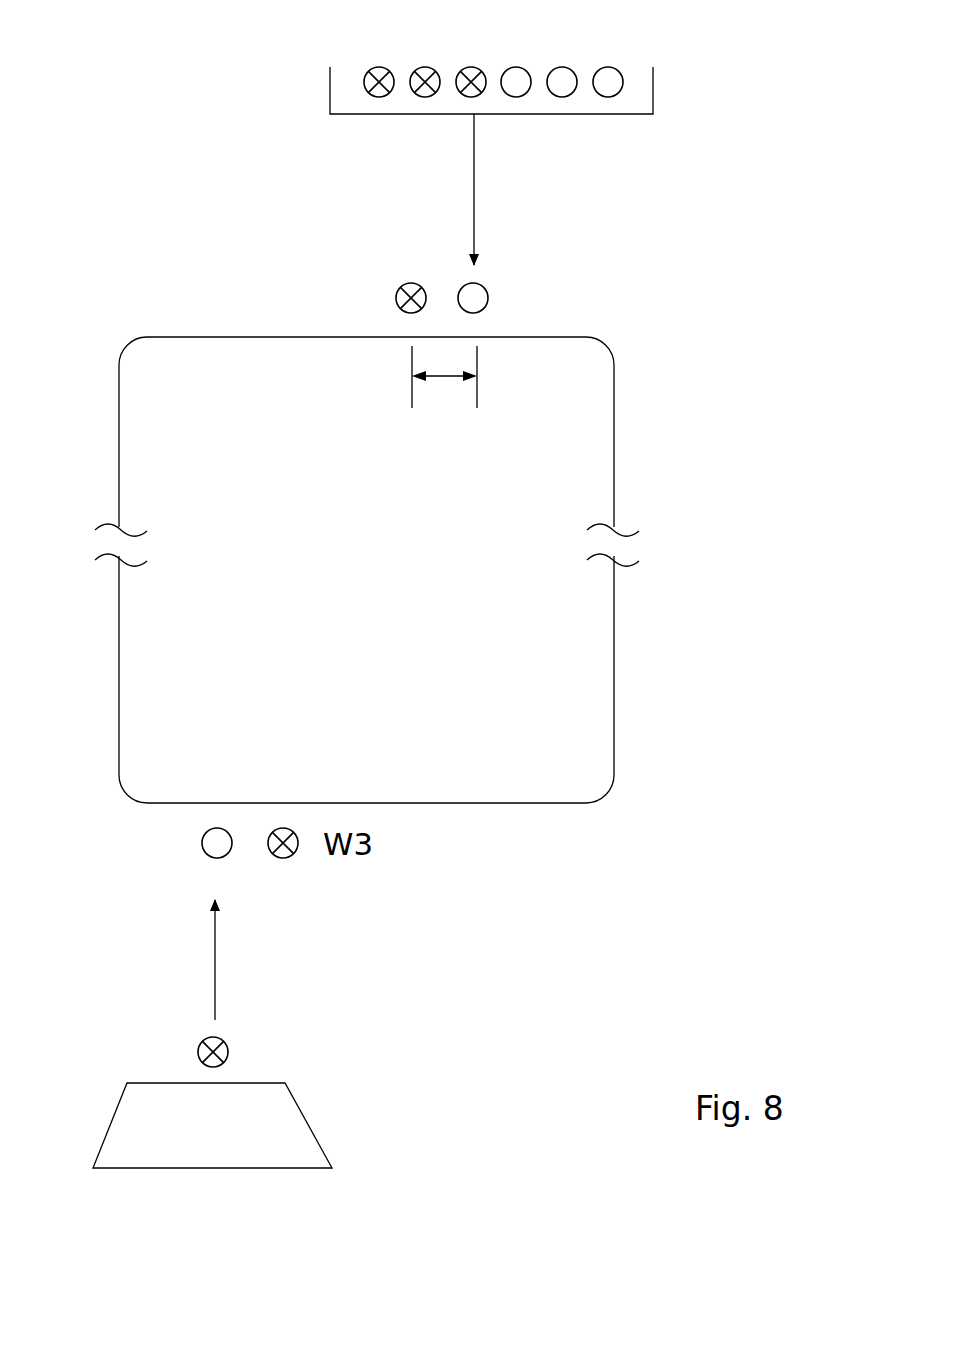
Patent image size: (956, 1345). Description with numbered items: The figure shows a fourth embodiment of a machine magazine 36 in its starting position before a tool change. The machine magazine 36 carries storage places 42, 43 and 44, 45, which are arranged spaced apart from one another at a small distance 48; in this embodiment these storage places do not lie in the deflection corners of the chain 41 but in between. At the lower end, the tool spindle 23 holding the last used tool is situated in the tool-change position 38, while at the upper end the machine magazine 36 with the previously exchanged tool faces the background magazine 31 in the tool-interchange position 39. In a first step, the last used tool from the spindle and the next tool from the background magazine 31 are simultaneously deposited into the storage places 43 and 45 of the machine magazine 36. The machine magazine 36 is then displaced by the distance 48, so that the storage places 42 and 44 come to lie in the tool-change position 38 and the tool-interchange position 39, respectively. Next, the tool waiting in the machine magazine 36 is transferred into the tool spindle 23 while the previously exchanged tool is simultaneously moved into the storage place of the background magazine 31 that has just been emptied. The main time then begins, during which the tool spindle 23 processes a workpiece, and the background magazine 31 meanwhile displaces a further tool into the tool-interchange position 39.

The background magazine 31 is at (308, 125).
The tool-interchange position 39 is at (523, 241).
The storage place 44 is at (420, 286).
The storage place 45 is at (486, 290).
The machine magazine 36 is at (433, 527).
The chain 41 is at (614, 452).
The small distance 48 is at (441, 378).
The storage place 43 is at (204, 850).
The storage place 42 is at (295, 853).
The tool-change position 38 is at (327, 988).
The tool spindle 23 is at (207, 1143).